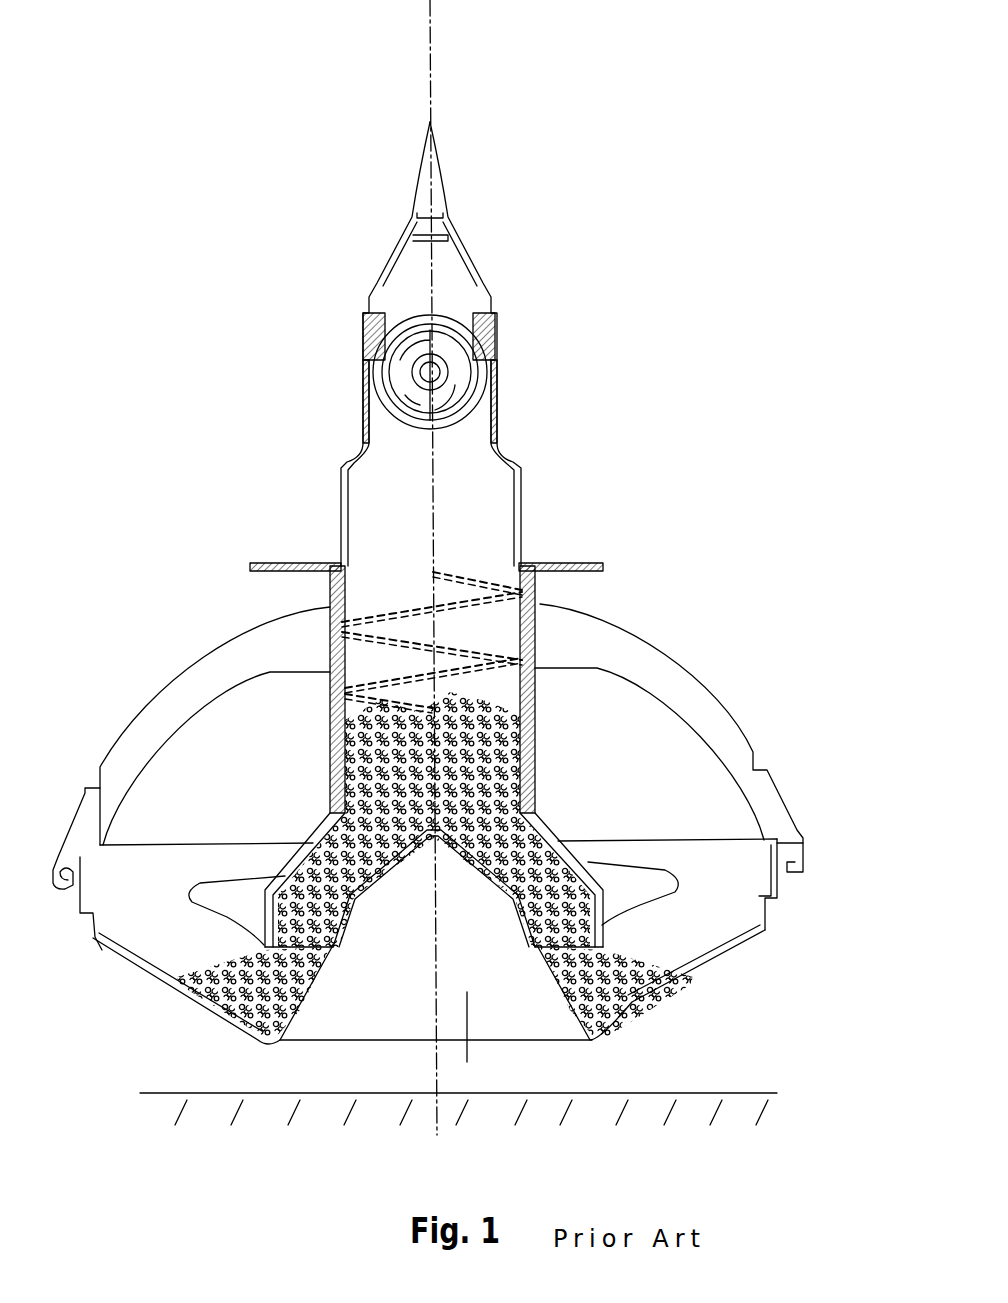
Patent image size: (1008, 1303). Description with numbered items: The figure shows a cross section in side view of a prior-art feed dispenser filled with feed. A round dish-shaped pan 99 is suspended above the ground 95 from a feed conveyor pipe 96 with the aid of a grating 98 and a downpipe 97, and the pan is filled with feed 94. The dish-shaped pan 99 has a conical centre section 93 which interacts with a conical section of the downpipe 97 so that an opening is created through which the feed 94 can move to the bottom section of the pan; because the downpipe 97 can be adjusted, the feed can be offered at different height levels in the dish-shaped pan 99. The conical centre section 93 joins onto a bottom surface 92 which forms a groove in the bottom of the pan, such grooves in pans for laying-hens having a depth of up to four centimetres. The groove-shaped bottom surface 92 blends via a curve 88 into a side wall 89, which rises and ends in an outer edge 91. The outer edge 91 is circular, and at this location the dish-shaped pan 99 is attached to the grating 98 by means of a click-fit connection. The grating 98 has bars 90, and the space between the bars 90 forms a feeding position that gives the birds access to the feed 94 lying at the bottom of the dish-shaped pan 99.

The curve 88 is at (640, 1003).
The side wall 89 is at (720, 957).
The bars 90 is at (188, 690).
The outer edge 91 is at (783, 878).
The bottom surface 92 is at (620, 1020).
The conical centre section 93 is at (468, 1043).
The feed 94 is at (346, 770).
The ground 95 is at (662, 1090).
The feed conveyor pipe 96 is at (482, 369).
The downpipe 97 is at (521, 464).
The grating 98 is at (752, 690).
The dish-shaped pan 99 is at (165, 992).